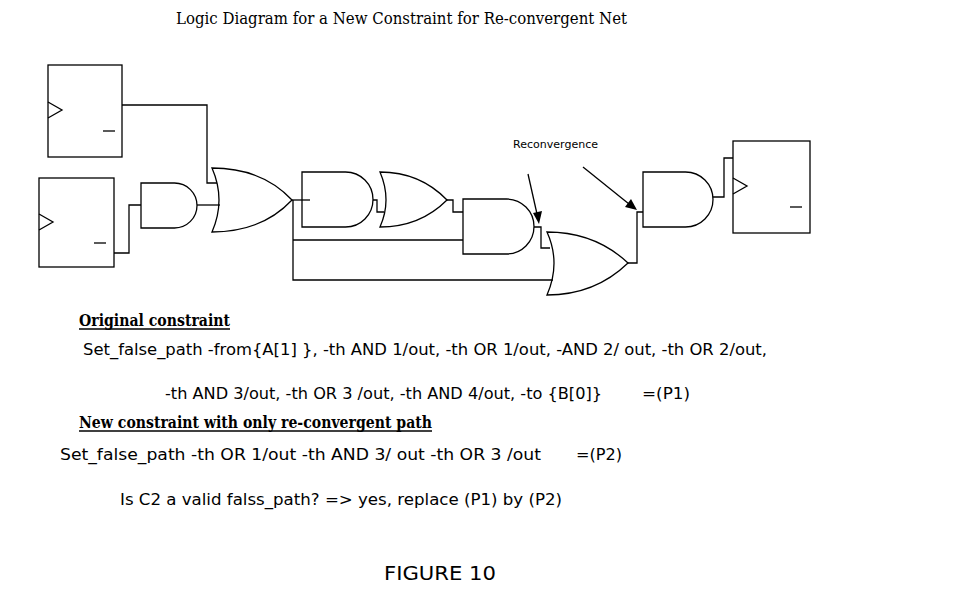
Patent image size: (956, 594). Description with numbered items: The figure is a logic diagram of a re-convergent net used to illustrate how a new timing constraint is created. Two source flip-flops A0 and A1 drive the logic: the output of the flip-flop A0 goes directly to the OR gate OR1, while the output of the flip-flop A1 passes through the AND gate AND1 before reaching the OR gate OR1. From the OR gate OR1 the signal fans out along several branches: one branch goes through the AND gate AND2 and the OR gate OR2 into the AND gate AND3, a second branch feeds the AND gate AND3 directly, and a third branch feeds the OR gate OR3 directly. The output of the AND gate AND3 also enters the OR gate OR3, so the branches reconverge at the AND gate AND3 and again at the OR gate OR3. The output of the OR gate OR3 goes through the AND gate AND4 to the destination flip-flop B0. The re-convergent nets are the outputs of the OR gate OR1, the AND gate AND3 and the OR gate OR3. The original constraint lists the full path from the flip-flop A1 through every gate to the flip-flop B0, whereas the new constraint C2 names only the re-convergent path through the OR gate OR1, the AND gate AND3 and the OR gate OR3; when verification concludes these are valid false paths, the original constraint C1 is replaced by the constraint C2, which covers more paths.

The flip-flop A0 is at (85, 120).
The flip-flop A1 is at (76, 232).
The flip-flop B0 is at (771, 197).
The AND gate 1 AND1 is at (169, 205).
The AND gate 2 AND2 is at (337, 199).
The AND gate 3 AND3 is at (498, 226).
The AND gate 4 AND4 is at (678, 199).
The OR gate 1 OR1 is at (252, 200).
The OR gate 2 OR2 is at (413, 199).
The OR gate 3 OR3 is at (587, 263).